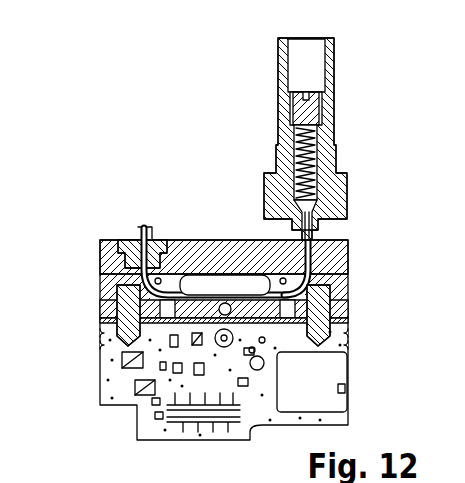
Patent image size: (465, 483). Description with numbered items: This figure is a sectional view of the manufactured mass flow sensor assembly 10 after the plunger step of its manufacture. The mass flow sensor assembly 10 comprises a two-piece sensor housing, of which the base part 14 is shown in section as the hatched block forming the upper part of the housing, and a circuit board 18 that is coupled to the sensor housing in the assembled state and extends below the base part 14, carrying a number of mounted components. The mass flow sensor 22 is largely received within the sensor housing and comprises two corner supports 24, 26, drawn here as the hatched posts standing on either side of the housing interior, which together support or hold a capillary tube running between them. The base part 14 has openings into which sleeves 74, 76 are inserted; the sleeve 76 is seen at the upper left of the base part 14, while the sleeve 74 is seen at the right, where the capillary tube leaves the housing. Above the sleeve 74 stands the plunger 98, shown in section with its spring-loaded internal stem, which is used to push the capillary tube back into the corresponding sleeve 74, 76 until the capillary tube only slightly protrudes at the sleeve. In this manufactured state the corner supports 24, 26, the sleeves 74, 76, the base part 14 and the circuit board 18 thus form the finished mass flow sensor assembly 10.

The mass flow sensor assembly 10 is at (122, 112).
The mass flow sensor 22 is at (90, 244).
The base part 14 is at (200, 245).
The sleeve 76 is at (132, 242).
The sleeve 74 is at (327, 246).
The corner support 26 is at (118, 311).
The corner support 24 is at (320, 292).
The plunger 98 is at (328, 66).
The circuit board 18 is at (100, 390).